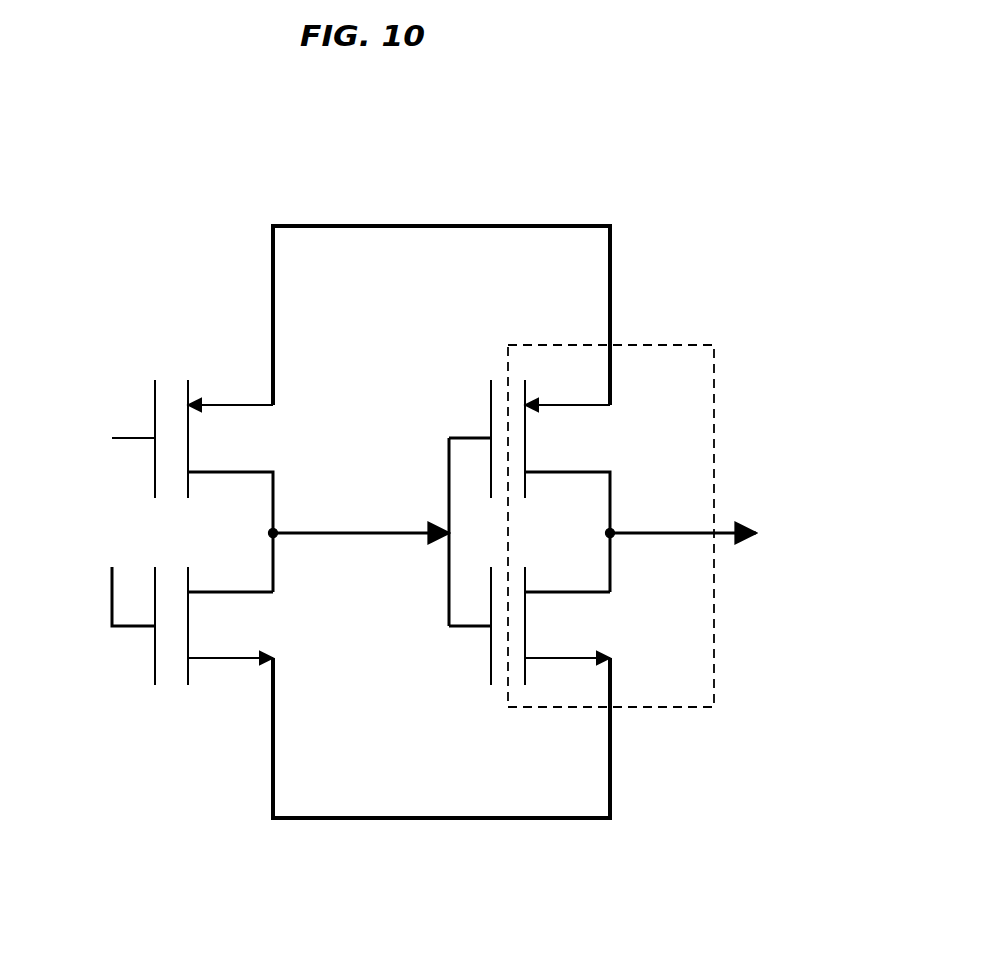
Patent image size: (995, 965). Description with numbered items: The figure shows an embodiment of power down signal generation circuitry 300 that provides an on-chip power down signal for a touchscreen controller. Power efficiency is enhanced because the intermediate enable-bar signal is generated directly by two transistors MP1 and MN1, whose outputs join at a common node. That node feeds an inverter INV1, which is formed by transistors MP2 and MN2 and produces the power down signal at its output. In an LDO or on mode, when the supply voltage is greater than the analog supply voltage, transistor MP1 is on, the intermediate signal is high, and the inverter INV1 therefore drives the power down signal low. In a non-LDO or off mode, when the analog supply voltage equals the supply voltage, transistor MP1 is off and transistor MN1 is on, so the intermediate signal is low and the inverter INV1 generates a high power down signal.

The power down signal generation circuitry 300 is at (668, 170).
The inverter INV1 is at (683, 345).
The transistor MP1 is at (193, 486).
The transistor MN1 is at (170, 623).
The transistor MP2 is at (569, 486).
The transistor MN2 is at (569, 626).